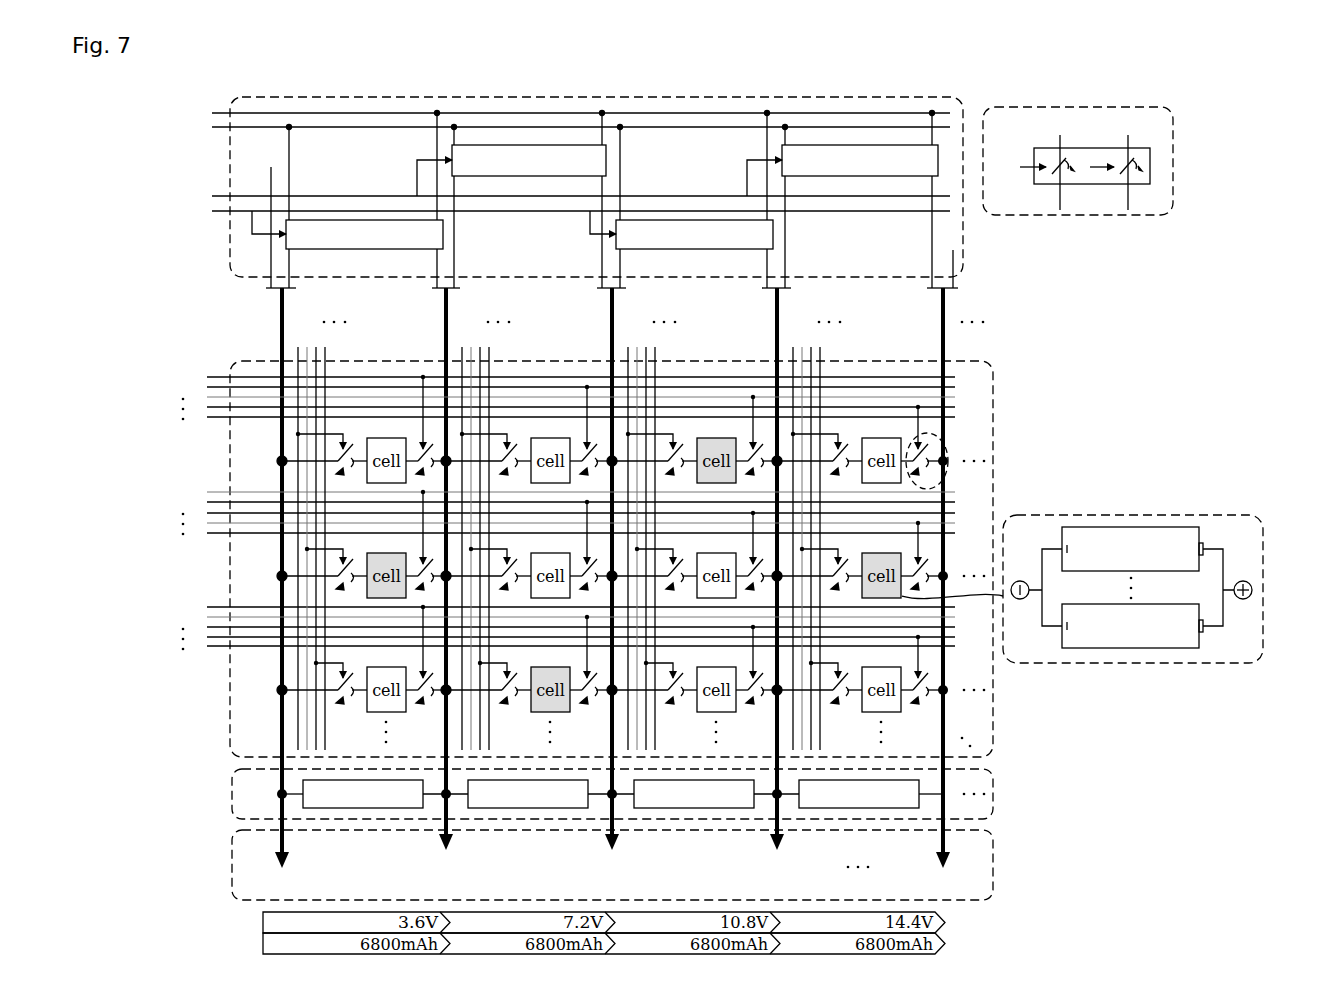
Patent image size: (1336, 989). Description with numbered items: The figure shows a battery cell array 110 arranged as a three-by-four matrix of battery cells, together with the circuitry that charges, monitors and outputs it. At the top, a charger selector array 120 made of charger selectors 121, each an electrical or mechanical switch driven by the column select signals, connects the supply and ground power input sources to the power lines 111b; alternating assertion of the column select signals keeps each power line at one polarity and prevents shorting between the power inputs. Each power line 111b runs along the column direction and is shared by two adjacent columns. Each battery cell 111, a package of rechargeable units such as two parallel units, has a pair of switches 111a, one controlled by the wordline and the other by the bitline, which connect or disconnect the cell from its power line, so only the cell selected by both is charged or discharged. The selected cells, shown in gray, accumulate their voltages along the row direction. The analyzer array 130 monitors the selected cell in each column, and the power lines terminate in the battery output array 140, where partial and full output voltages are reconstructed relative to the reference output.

The battery cell array 110 is at (993, 378).
The battery cell 111 is at (1095, 515).
The switch 111a is at (946, 448).
The power line 111b is at (945, 345).
The charger selector array 120 is at (963, 240).
The charger selector 121 is at (1030, 107).
The analyzer array 130 is at (993, 778).
The battery output array 140 is at (993, 857).